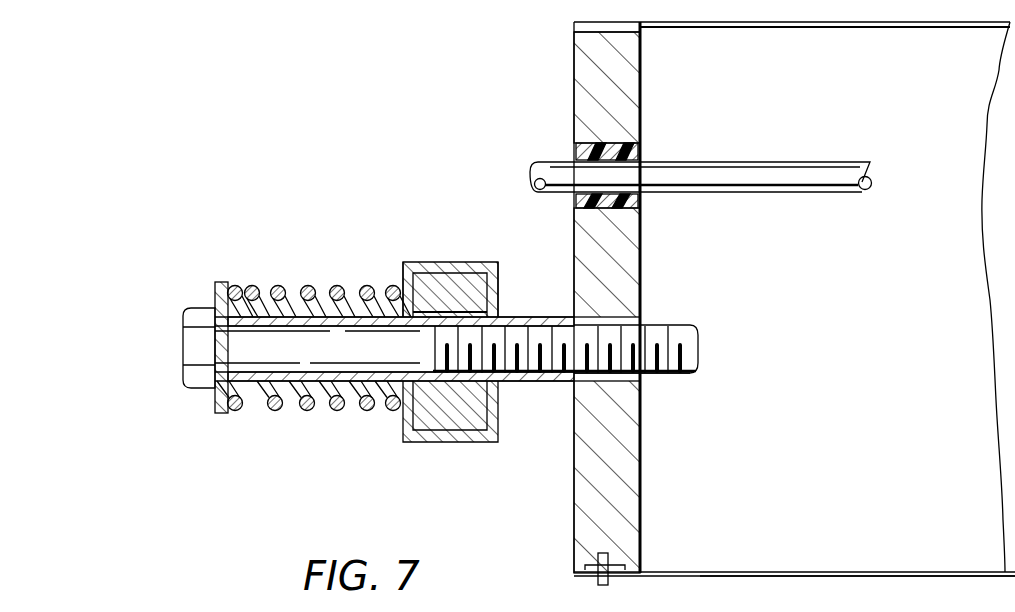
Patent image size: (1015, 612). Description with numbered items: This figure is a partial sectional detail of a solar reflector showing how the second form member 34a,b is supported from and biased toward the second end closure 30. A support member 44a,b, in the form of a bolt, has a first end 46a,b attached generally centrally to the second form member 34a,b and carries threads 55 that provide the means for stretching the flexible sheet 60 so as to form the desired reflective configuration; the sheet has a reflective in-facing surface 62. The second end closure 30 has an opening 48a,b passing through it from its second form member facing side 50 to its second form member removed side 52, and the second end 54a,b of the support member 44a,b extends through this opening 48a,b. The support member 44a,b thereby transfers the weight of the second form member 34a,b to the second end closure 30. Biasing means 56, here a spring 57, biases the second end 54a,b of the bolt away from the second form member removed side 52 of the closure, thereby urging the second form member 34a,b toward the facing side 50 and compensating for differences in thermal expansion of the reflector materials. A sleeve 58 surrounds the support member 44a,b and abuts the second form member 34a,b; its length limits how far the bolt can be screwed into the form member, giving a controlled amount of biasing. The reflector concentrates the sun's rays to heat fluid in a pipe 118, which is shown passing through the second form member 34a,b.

The second end closure 30 is at (445, 262).
The second form member 34a,b is at (642, 248).
The support member 44a,b is at (183, 358).
The first end of the support member 46a,b is at (670, 327).
The opening 48a,b is at (503, 384).
The second form member facing side 50 is at (498, 272).
The second form member removed side 52 is at (403, 272).
The second end of the support member 54a,b is at (202, 317).
The threads 55 is at (667, 375).
The biasing means 56 is at (278, 284).
The spring 57 is at (272, 415).
The sleeve 58 is at (323, 400).
The flexible sheet 60 is at (728, 570).
The reflective in-facing surface 62 is at (828, 572).
The pipe 118 is at (740, 162).